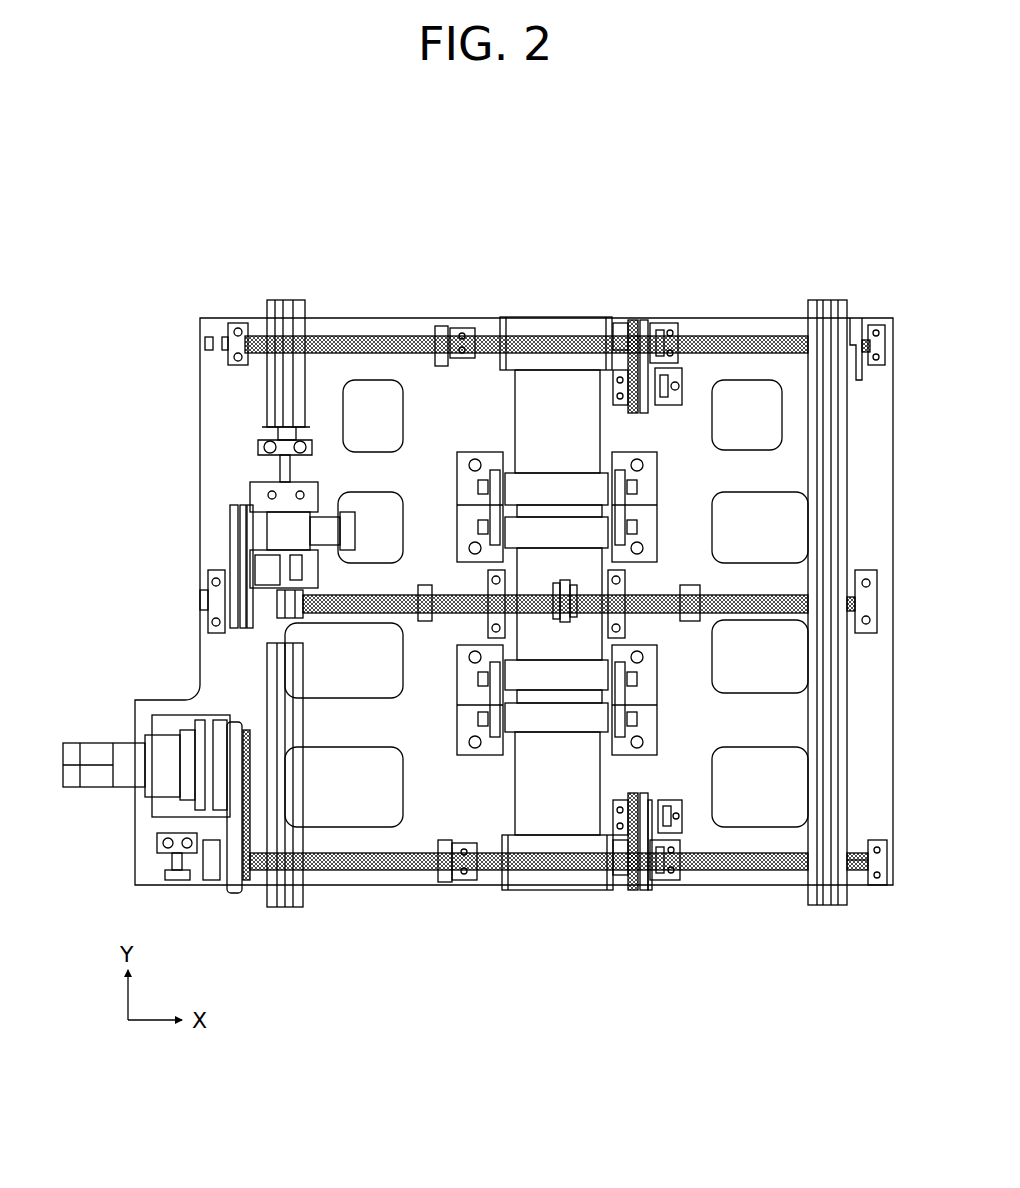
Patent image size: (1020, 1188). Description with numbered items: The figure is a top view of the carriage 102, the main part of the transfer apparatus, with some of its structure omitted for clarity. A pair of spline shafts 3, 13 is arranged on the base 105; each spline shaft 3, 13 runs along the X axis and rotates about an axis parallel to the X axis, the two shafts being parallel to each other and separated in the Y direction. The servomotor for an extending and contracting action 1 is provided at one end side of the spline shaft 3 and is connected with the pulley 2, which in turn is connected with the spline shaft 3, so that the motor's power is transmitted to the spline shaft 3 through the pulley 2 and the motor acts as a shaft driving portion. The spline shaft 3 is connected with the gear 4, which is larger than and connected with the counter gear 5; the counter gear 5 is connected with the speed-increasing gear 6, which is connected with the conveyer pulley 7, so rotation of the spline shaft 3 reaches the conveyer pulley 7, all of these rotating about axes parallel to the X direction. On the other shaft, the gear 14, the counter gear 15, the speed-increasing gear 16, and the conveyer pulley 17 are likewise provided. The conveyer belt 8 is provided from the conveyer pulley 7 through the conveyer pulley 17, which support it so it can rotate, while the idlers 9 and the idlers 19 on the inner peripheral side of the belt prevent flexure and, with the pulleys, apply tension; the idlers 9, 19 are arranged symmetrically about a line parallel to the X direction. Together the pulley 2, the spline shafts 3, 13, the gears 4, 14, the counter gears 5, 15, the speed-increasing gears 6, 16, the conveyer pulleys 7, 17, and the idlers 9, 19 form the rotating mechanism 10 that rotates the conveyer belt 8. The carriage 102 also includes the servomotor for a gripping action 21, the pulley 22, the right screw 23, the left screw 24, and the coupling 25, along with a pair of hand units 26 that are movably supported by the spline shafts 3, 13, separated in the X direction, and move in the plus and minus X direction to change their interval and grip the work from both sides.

The servomotor for an extending and contracting action 1 is at (163, 768).
The pulley 2 is at (215, 870).
The spline shaft 3 is at (390, 873).
The gear 4 is at (644, 890).
The counter gear 5 is at (648, 797).
The speed-increasing gear 6 is at (633, 792).
The conveyer pulley 7 is at (622, 878).
The conveyer belt 8 is at (535, 410).
The idlers 9 is at (530, 673).
The rotating mechanism 10 is at (594, 274).
The spline shaft 13 is at (391, 333).
The gear 14 is at (648, 323).
The counter gear 15 is at (652, 410).
The speed-increasing gear 16 is at (632, 413).
The conveyer pulley 17 is at (625, 332).
The idlers 19 is at (528, 473).
The servomotor for a gripping action 21 is at (282, 525).
The pulley 22 is at (237, 570).
The right screw 23 is at (448, 616).
The left screw 24 is at (667, 613).
The coupling 25 is at (565, 620).
The hand units 26 is at (287, 905).
The carriage 102 is at (248, 256).
The base 105 is at (748, 887).